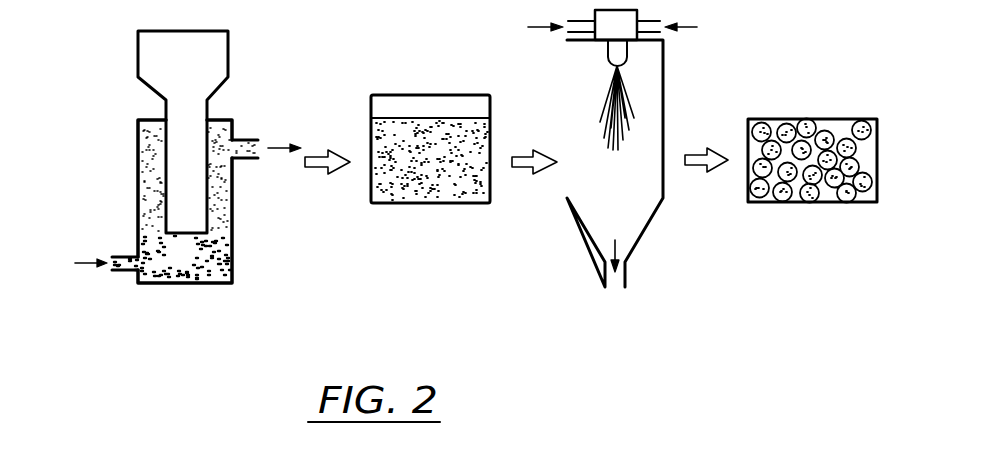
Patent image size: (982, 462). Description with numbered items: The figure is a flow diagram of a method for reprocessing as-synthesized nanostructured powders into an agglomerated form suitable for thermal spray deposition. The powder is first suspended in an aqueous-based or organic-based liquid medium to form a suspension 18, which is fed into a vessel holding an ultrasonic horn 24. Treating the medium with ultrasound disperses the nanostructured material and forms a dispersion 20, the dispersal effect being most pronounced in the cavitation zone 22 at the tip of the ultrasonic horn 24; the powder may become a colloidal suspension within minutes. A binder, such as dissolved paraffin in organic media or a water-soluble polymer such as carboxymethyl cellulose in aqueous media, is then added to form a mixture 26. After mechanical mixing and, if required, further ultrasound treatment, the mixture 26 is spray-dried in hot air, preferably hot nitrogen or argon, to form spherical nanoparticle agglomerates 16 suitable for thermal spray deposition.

The spherical nanoparticle agglomerates 16 is at (793, 119).
The suspension 18 is at (115, 262).
The dispersion 20 is at (250, 147).
The cavitation zone 22 is at (192, 263).
The ultrasonic horn 24 is at (228, 53).
The mixture 26 is at (418, 125).